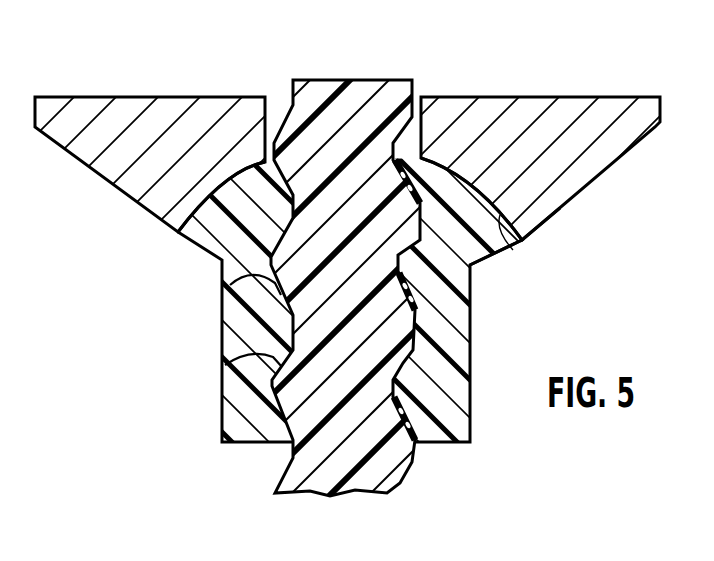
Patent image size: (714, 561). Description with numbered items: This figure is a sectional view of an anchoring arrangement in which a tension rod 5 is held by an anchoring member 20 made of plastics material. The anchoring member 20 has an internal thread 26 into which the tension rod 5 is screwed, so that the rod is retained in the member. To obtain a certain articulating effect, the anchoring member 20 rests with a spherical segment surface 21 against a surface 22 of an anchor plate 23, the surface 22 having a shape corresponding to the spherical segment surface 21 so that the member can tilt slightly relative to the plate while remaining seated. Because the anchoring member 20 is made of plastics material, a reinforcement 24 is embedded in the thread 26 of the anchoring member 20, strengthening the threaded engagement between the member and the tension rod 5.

The tension rod 5 is at (318, 94).
The anchoring member 20 is at (230, 413).
The spherical segment surface 21 is at (503, 210).
The surface 22 is at (440, 163).
The anchor plate 23 is at (122, 172).
The reinforcement 24 is at (222, 364).
The thread 26 is at (232, 283).